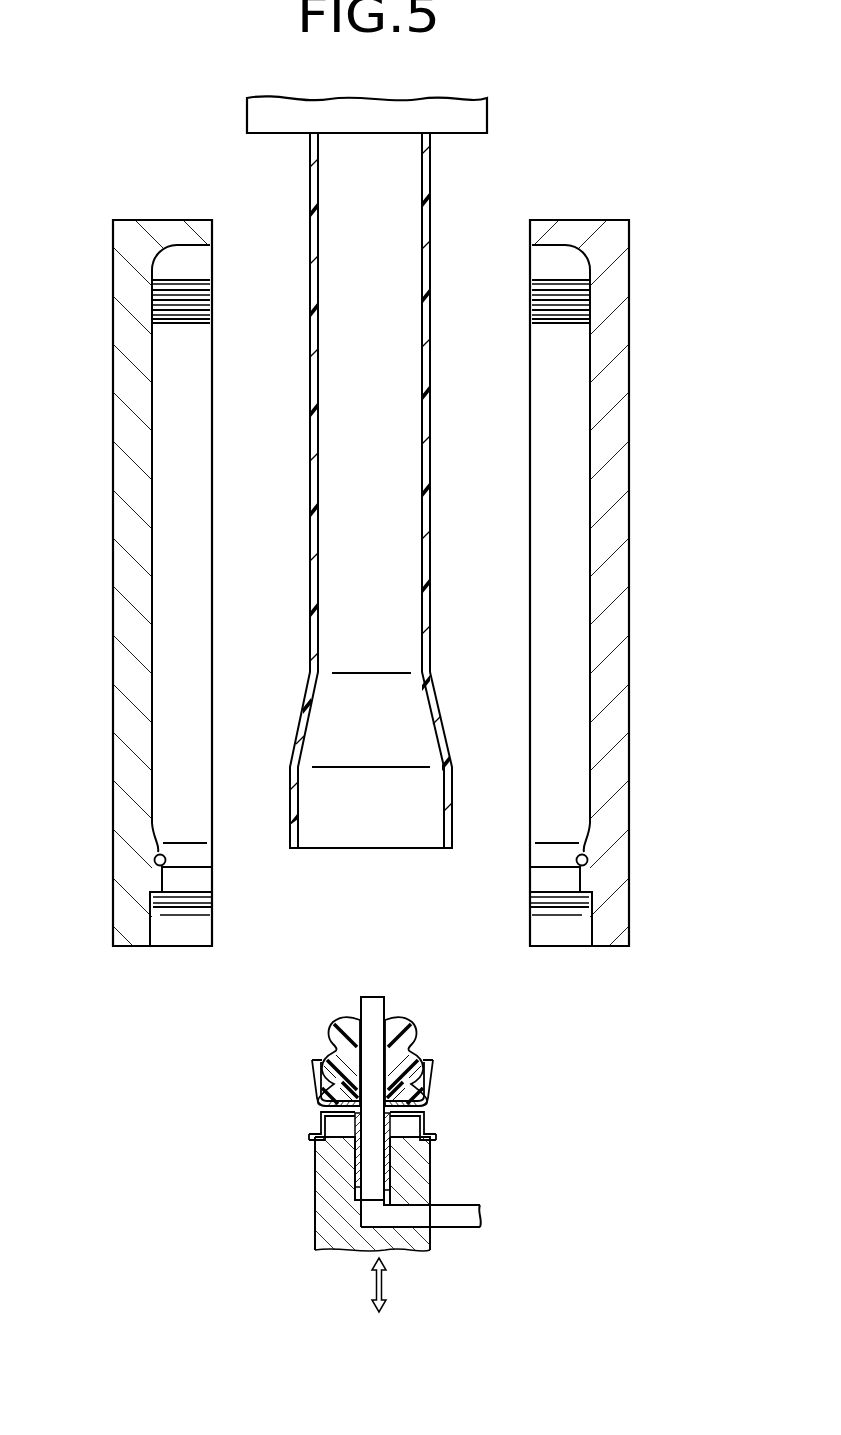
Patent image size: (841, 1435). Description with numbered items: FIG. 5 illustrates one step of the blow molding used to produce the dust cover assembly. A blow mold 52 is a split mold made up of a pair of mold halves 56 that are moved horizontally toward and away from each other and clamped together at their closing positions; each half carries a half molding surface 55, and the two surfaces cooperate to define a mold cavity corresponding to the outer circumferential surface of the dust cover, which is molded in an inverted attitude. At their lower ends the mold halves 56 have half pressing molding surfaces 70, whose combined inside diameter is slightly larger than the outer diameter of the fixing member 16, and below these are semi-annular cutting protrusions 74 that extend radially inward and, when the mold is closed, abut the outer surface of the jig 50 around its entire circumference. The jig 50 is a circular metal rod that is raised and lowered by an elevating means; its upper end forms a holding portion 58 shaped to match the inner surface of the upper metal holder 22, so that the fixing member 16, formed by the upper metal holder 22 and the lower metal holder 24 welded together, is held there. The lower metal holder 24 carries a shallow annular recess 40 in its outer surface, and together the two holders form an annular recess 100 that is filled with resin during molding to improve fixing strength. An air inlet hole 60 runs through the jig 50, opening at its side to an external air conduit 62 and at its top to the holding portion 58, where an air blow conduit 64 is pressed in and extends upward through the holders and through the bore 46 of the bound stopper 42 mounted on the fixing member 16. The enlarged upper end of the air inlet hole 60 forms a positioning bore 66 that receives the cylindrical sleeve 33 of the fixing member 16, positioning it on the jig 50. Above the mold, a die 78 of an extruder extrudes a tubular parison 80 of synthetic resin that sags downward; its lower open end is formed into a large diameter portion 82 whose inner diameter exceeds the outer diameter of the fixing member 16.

The die 78 is at (468, 112).
The tubular parison 80 is at (313, 390).
The large diameter portion 82 is at (293, 828).
The blow mold 52 is at (578, 205).
The mold halves 56 is at (130, 432).
The half molding surface 55 is at (158, 573).
The half pressing molding surfaces 70 is at (157, 865).
The semi-annular cutting protrusions 74 is at (153, 910).
The air blow conduit 64 is at (375, 1005).
The external air conduit 62 is at (455, 1218).
The jig 50 is at (328, 1230).
The positioning bore 66 is at (358, 1168).
The cylindrical sleeve 33 is at (390, 1168).
The holding portion 58 is at (425, 1110).
The annular recess 40 is at (430, 1082).
The bore 46 is at (350, 1060).
The bound stopper 42 is at (410, 1035).
The lower metal holder 24 is at (310, 1063).
The fixing member 16 is at (310, 1092).
The annular recess 100 is at (317, 1112).
The upper metal holder 22 is at (320, 1117).
The air inlet hole 60 is at (401, 1220).